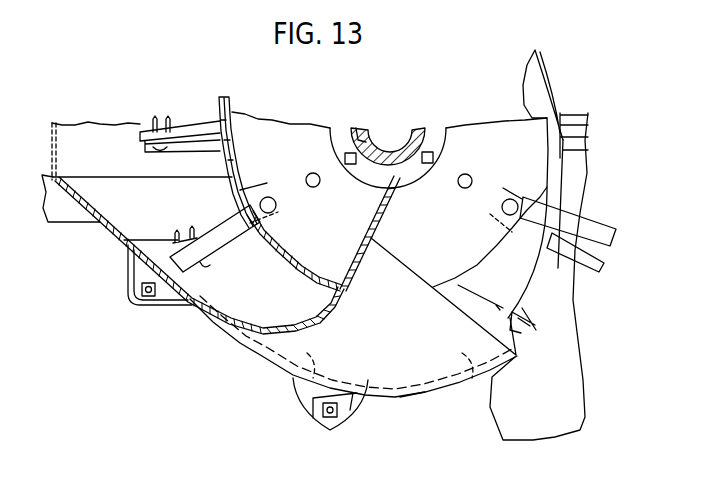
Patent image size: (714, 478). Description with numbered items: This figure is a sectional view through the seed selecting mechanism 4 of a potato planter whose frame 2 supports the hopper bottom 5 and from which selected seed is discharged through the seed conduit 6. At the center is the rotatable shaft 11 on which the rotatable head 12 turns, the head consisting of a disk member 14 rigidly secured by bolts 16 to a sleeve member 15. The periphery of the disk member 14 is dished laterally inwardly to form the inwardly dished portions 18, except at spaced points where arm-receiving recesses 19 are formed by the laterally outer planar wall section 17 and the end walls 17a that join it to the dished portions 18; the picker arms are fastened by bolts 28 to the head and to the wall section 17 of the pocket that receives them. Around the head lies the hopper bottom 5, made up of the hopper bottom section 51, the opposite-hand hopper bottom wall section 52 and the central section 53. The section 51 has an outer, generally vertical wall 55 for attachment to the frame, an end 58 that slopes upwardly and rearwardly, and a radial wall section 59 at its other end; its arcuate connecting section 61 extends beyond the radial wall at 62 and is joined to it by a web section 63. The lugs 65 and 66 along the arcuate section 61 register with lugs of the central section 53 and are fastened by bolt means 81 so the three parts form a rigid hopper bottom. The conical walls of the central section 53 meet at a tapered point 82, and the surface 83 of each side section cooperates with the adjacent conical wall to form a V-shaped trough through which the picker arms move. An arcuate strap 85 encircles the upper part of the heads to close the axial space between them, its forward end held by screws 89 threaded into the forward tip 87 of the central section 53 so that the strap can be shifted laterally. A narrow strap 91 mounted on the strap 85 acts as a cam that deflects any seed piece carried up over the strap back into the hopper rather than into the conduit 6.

The frame 2 is at (62, 212).
The seed selecting mechanism 4 is at (281, 112).
The hopper bottom 5 is at (199, 255).
The seed conduit 6 is at (567, 303).
The rotatable shaft 11 is at (398, 136).
The rotatable head 12 is at (299, 159).
The disk member 14 is at (477, 137).
The sleeve member 15 is at (362, 130).
The bolts 16 is at (352, 164).
The planar wall section 17 is at (258, 222).
The end walls 17a is at (247, 190).
The inwardly dished portions 18 is at (537, 168).
The arm-receiving recesses 19 is at (244, 208).
The bolts 28 is at (458, 184).
The hopper bottom section 51 is at (76, 176).
The hopper bottom wall section 52 is at (256, 364).
The central section of hopper bottom wall 53 is at (441, 282).
The wall 55 is at (157, 190).
The end of hopper bottom section 58 is at (107, 226).
The radial wall section 59 is at (392, 198).
The arcuate connecting section 61 is at (309, 355).
The extension of arcuate section 62 is at (463, 356).
The web section 63 is at (395, 277).
The lug 65 is at (345, 413).
The lug 66 is at (142, 273).
The bolt means 81 is at (148, 297).
The point 82 is at (148, 240).
The surface 83 is at (417, 373).
The arcuate strap 85 is at (229, 96).
The forward tip 87 is at (534, 68).
The screws 89 is at (563, 113).
The narrow strap 91 is at (219, 104).